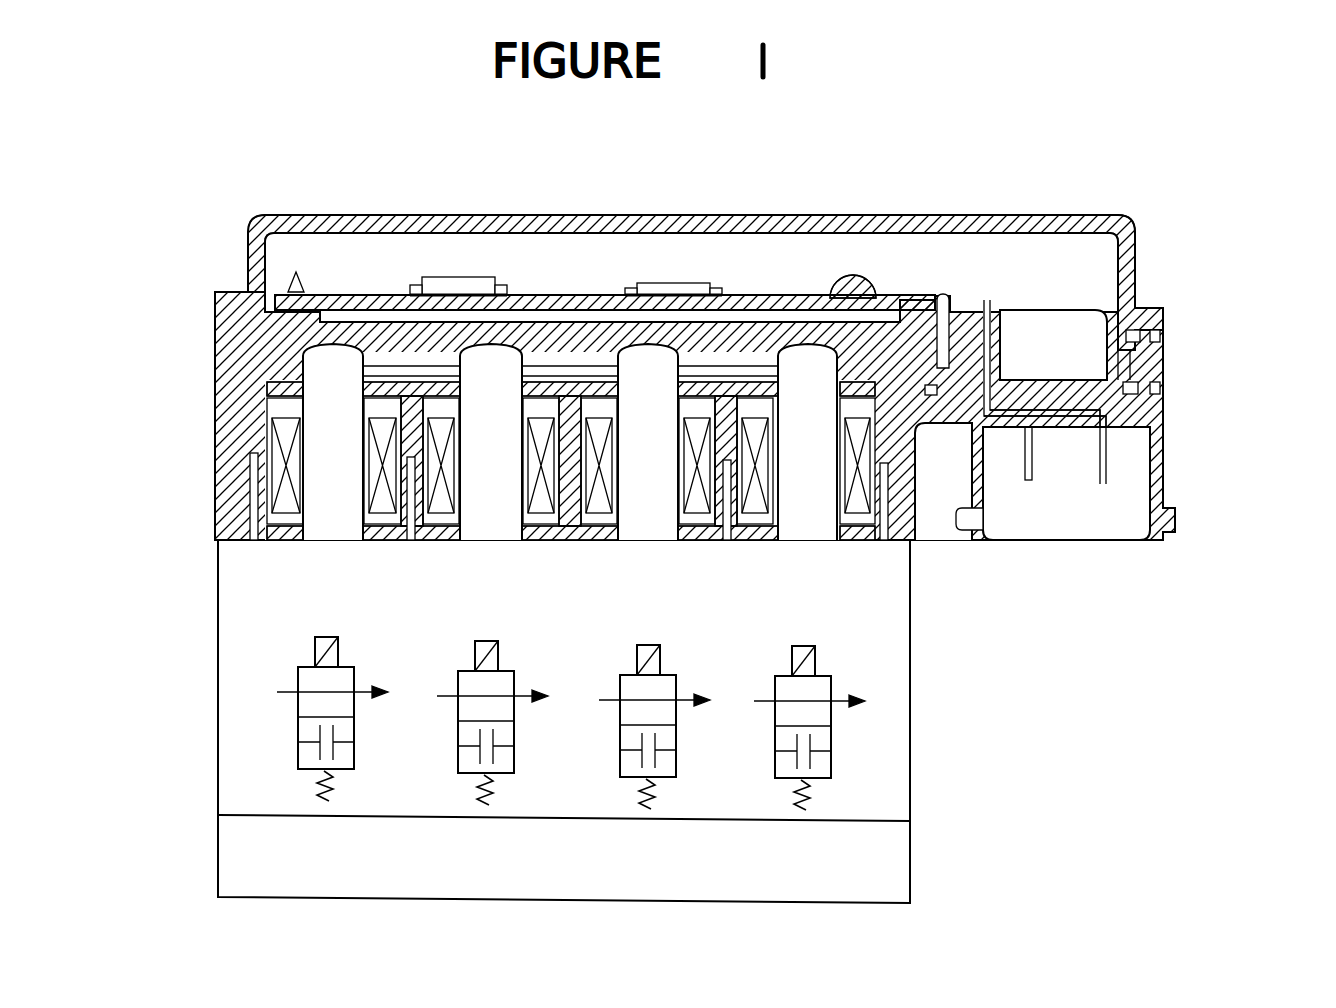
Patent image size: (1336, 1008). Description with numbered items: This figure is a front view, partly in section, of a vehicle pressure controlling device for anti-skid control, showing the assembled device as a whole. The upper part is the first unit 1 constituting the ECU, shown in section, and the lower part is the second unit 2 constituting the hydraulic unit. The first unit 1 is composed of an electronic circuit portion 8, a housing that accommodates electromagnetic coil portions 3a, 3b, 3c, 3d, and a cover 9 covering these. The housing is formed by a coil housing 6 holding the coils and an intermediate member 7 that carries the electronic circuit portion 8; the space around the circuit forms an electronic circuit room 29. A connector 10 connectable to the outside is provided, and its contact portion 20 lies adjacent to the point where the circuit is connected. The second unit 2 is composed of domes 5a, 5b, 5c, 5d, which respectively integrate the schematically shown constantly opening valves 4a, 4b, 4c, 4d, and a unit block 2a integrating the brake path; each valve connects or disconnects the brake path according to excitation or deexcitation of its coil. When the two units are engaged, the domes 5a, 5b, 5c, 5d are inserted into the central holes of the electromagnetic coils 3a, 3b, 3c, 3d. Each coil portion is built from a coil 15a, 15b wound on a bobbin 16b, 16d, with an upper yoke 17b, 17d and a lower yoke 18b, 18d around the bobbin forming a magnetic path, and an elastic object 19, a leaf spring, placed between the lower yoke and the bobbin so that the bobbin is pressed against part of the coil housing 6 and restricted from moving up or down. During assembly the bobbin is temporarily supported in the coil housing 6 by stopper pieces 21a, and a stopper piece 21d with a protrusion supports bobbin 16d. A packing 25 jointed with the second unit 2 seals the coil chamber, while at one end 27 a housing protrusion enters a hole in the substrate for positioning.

The first unit 1 is at (1160, 484).
The second unit 2 is at (910, 800).
The unit block 2a is at (872, 752).
The electromagnetic coil portion 3a is at (383, 382).
The electromagnetic coil portion 3b is at (540, 382).
The electromagnetic coil portion 3c is at (694, 382).
The electromagnetic coil portion 3d is at (860, 382).
The constantly opening valve 4a is at (346, 770).
The constantly opening valve 4b is at (506, 774).
The constantly opening valve 4c is at (668, 778).
The constantly opening valve 4d is at (822, 779).
The dome 5a is at (342, 515).
The dome 5b is at (488, 510).
The dome 5c is at (638, 520).
The dome 5d is at (793, 525).
The coil housing 6 is at (905, 507).
The intermediate member 7 is at (940, 340).
The electronic circuit portion 8 is at (586, 296).
The cover 9 is at (1125, 232).
The connector 10 is at (1072, 470).
The coil 15a is at (300, 528).
The coil 15b is at (413, 530).
The bobbin 16b is at (478, 540).
The bobbin 16d is at (752, 540).
The upper yoke 17b is at (440, 384).
The upper yoke 17d is at (750, 384).
The lower yoke 18b is at (432, 520).
The lower yoke 18d is at (876, 540).
The elastic object 19 is at (548, 540).
The contact portion of connector 20 is at (986, 302).
The stopper piece 21a is at (262, 540).
The stopper piece 21d is at (730, 540).
The packing 25 is at (912, 560).
The one end 27 is at (300, 290).
The electronic circuit room 29 is at (832, 262).